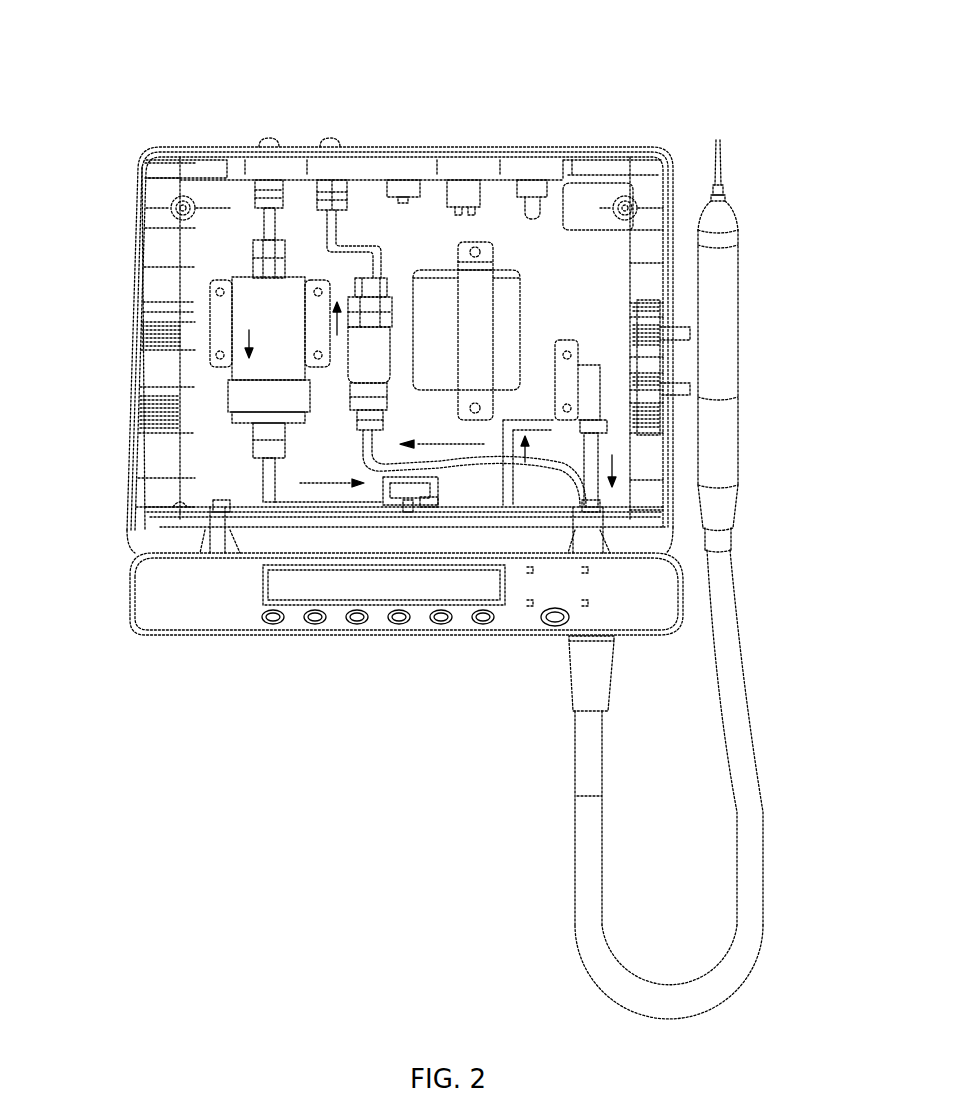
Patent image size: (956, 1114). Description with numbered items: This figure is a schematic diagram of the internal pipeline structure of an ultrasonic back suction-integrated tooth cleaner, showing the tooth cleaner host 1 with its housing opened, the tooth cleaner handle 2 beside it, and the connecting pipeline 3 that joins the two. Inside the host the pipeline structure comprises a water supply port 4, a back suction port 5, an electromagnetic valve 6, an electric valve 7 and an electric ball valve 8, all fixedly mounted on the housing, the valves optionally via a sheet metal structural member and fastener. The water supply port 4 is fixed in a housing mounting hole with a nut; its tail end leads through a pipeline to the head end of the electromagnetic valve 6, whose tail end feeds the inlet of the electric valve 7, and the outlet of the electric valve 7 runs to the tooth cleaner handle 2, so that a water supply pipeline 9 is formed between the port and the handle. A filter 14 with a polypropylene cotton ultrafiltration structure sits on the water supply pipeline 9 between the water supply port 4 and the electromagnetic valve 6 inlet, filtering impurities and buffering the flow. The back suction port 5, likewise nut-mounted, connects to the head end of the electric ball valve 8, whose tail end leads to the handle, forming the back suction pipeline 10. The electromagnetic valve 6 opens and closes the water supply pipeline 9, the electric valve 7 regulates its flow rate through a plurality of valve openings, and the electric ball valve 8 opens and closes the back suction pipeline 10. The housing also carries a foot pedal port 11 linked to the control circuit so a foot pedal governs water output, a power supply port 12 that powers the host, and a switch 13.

The tooth cleaner host 1 is at (183, 578).
The tooth cleaner handle 2 is at (718, 345).
The connecting pipeline 3 is at (653, 995).
The water supply port 4 is at (268, 190).
The back suction port 5 is at (333, 200).
The electromagnetic valve 6 is at (403, 490).
The electric valve 7 is at (587, 383).
The electric ball valve 8 is at (440, 342).
The water supply pipeline 9 is at (265, 485).
The back suction pipeline 10 is at (485, 465).
The foot pedal port 11 is at (403, 192).
The power supply port 12 is at (457, 192).
The switch 13 is at (537, 190).
The filter 14 is at (265, 330).